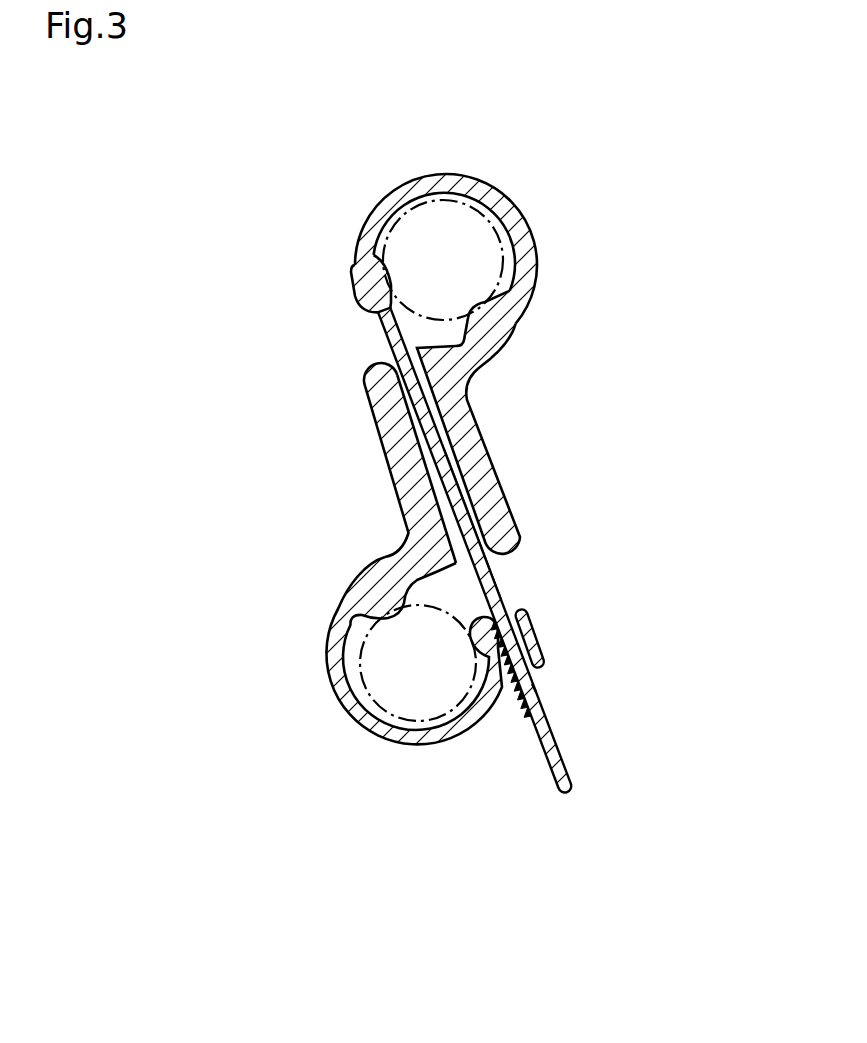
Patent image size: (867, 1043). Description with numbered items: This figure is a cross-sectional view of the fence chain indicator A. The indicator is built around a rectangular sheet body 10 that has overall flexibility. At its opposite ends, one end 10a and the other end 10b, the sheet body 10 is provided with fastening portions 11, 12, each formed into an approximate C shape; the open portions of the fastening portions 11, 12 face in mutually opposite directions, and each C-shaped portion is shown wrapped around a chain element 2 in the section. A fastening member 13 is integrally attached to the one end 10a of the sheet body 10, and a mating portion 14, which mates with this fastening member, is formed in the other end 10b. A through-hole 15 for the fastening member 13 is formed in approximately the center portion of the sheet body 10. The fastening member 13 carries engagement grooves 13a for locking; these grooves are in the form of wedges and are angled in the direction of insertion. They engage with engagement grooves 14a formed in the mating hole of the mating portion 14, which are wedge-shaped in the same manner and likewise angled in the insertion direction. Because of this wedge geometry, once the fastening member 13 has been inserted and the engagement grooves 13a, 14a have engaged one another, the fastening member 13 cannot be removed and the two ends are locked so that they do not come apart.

The fence chain indicator A is at (380, 168).
The pipe 2 is at (448, 230).
The sheet body 10 is at (494, 458).
The one end of sheet body 10a is at (392, 292).
The other end of sheet body 10b is at (500, 587).
The fastening portion 11 is at (532, 240).
The fastening portion 12 is at (372, 742).
The fastening member 13 is at (565, 795).
The engagement grooves 13a is at (522, 720).
The mating portion 14 is at (542, 646).
The engagement grooves 14a is at (536, 690).
The through-hole 15 is at (387, 356).